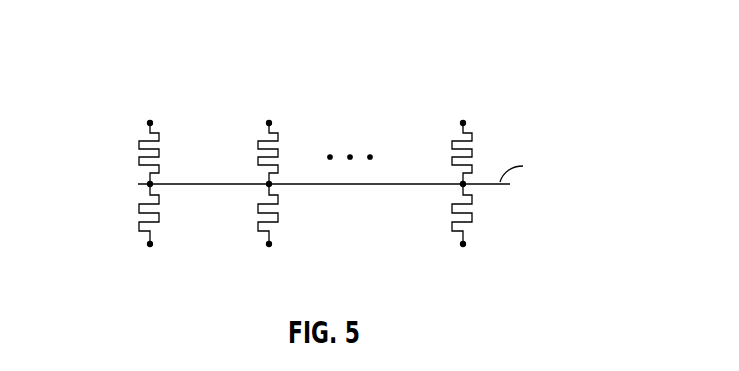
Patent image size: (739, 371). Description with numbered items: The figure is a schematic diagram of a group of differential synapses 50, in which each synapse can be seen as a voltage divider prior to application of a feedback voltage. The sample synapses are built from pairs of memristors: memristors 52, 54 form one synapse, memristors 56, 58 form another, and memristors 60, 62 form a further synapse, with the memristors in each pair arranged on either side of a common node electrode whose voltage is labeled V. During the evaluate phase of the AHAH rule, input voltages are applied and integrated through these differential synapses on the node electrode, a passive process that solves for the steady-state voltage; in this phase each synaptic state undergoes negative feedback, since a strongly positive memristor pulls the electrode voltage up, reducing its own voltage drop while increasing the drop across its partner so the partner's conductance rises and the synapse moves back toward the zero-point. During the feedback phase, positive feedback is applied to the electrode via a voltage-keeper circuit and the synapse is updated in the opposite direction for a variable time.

The resistor ladder circuit 50 is at (128, 43).
The memristor 52 is at (166, 133).
The memristor 54 is at (166, 232).
The memristor 56 is at (286, 133).
The memristor 58 is at (286, 232).
The memristor 60 is at (480, 133).
The memristor 62 is at (480, 232).